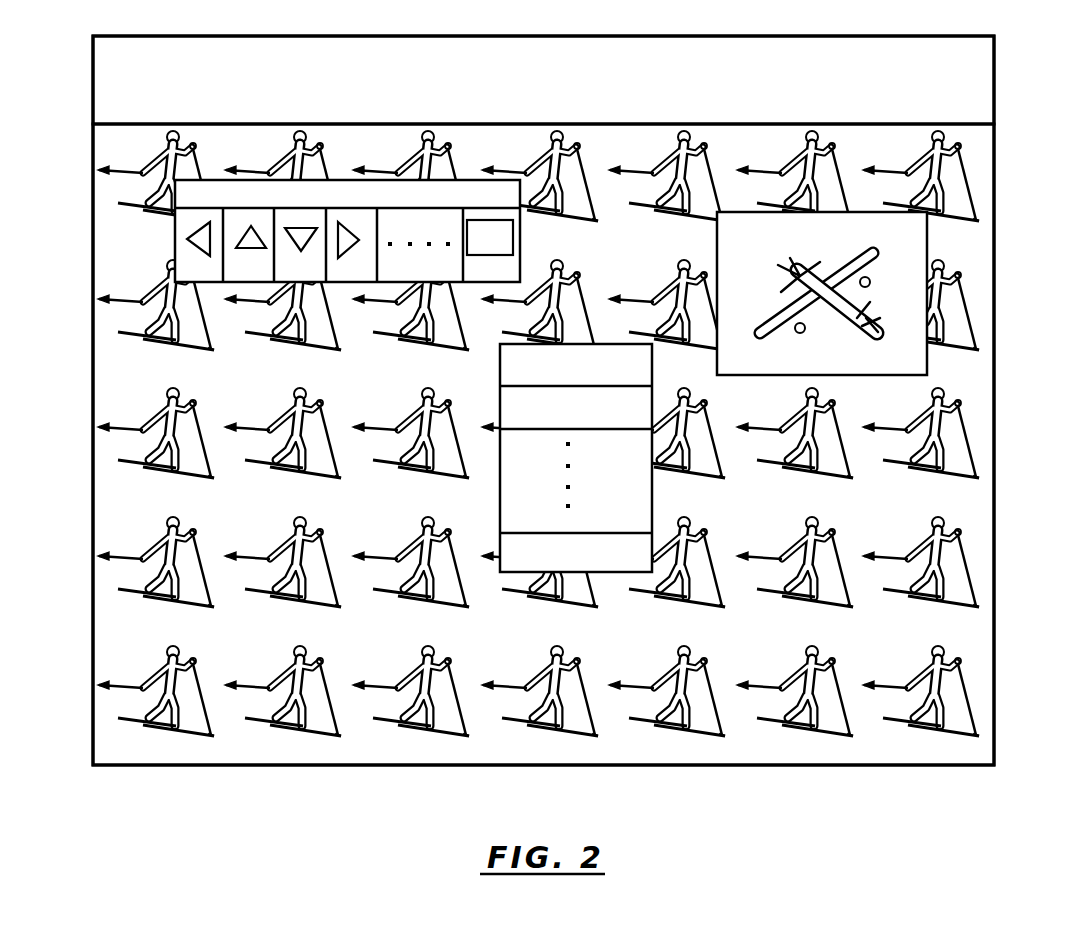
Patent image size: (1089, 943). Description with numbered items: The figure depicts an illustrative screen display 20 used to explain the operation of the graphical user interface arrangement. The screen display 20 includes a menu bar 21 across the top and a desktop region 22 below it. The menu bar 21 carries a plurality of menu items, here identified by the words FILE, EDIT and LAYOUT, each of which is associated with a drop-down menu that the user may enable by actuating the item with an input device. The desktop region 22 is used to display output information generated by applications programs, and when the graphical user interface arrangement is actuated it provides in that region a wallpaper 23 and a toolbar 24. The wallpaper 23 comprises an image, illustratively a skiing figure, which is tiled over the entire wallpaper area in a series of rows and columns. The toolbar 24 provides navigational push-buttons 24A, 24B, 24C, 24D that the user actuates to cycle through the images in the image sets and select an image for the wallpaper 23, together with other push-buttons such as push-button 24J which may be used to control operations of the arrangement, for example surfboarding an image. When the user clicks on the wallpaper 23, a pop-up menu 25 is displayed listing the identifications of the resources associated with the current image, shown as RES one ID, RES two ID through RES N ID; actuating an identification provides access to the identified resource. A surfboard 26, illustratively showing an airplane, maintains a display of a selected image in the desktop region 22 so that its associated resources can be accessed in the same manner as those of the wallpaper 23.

The screen display 20 is at (206, 29).
The menu bar 21 is at (995, 62).
The desktop region 22 is at (995, 178).
The wallpaper 23 is at (970, 679).
The toolbar 24 is at (347, 231).
The navigational push-button 24A is at (197, 250).
The navigational push-button 24B is at (248, 251).
The navigational push-button 24C is at (299, 252).
The navigational push-button 24D is at (350, 250).
The push-button 24J is at (490, 251).
The pop-up menu 25 is at (650, 493).
The surfboard 26 is at (924, 243).